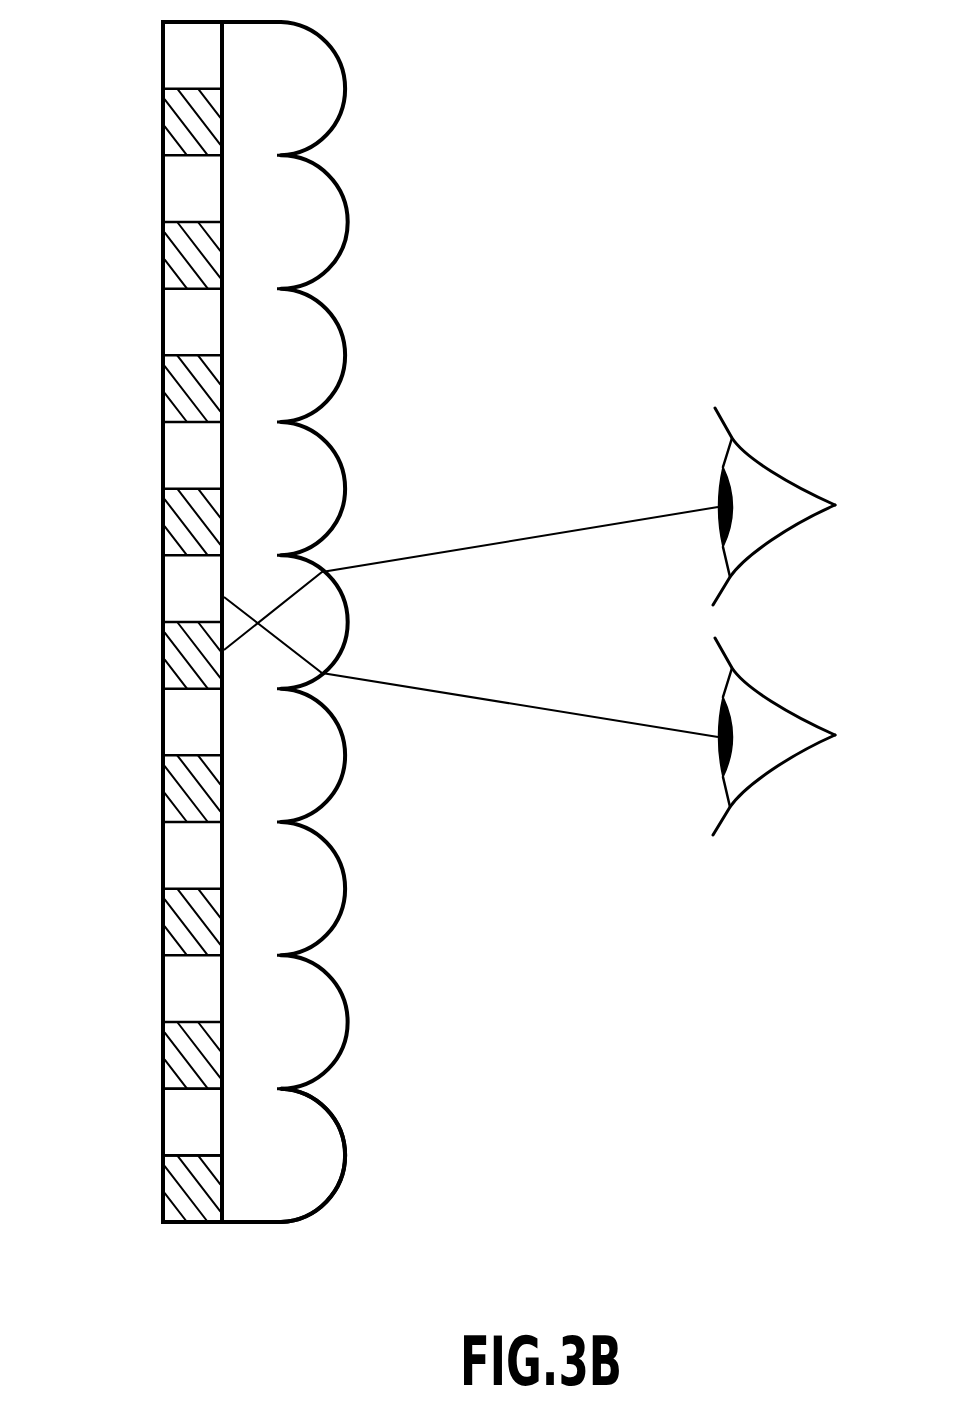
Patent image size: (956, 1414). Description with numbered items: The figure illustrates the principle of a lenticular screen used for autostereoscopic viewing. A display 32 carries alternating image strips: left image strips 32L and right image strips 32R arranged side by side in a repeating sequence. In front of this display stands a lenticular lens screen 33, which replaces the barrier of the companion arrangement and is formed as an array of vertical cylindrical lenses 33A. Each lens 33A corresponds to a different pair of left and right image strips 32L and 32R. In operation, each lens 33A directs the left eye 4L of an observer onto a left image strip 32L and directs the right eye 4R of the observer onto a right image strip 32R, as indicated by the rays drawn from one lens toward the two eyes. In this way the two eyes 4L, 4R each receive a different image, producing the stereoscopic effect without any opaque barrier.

The display panel with image strips 32 is at (150, 898).
The right image strip 32R is at (178, 1125).
The left image strip 32L is at (178, 1193).
The lenticular lens screen 33 is at (348, 885).
The vertical cylindrical lens 33A is at (303, 1153).
The right eye 4R is at (762, 467).
The left eye 4L is at (762, 697).